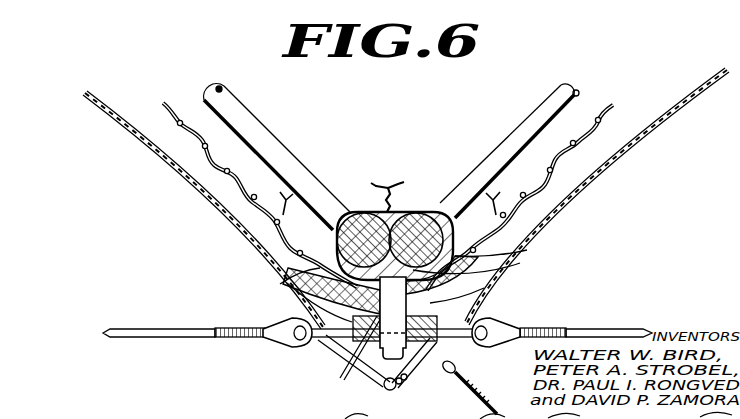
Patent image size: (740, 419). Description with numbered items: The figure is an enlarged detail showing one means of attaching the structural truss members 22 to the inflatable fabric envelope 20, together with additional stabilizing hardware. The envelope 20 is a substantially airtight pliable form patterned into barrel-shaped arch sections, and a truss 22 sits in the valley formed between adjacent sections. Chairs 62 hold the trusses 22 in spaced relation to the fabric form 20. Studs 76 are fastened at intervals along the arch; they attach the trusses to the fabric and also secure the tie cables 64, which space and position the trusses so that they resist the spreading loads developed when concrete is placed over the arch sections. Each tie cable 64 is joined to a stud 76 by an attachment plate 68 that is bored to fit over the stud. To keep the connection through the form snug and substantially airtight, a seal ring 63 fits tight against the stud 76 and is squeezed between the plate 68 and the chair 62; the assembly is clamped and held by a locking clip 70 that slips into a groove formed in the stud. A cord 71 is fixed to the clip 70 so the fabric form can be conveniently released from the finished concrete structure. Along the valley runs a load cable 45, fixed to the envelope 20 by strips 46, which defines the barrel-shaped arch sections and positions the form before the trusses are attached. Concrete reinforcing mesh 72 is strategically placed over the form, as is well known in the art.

The fabric envelope 20 is at (166, 165).
The structural truss member 22 is at (284, 150).
The concrete reinforcing mesh 72 is at (181, 114).
The stud 76 is at (281, 284).
The chair 62 is at (480, 273).
The seal ring 63 is at (477, 308).
The tie cable 64 is at (143, 328).
The attachment plate 68 is at (308, 343).
The strip 46 is at (349, 349).
The locking clip 70 is at (342, 378).
The load cable 45 is at (383, 387).
The cord 71 is at (457, 390).